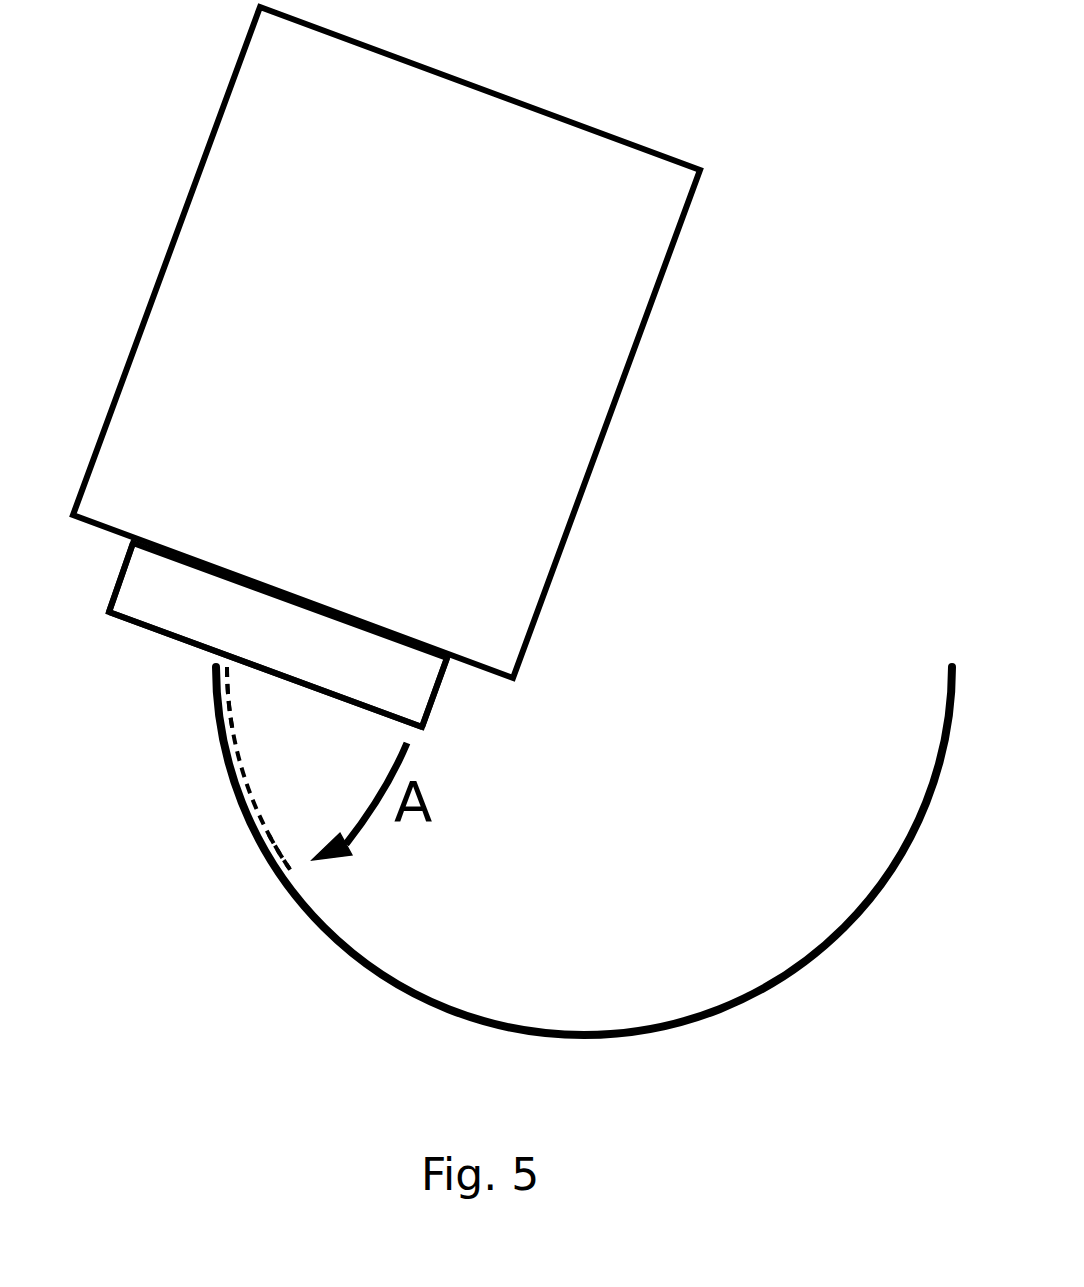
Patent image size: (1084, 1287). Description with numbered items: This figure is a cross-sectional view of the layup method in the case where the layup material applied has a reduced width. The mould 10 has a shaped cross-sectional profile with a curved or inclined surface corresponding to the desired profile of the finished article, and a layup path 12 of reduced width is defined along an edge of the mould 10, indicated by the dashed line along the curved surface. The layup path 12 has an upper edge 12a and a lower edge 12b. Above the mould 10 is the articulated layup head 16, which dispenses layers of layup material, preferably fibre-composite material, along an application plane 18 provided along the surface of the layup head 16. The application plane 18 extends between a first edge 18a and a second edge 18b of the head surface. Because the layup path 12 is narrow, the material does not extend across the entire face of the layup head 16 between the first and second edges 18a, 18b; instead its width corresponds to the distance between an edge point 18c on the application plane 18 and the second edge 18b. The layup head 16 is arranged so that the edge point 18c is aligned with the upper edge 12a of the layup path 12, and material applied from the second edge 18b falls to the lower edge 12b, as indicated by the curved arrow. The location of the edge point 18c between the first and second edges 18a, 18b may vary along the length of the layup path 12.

The mould 10 is at (828, 948).
The layup path 12 is at (243, 772).
The upper edge 12a is at (198, 697).
The lower edge 12b is at (257, 888).
The articulated layup head 16 is at (200, 163).
The application plane 18 is at (285, 673).
The first edge 18a is at (134, 594).
The second edge 18b is at (421, 696).
The edge point 18c is at (259, 638).